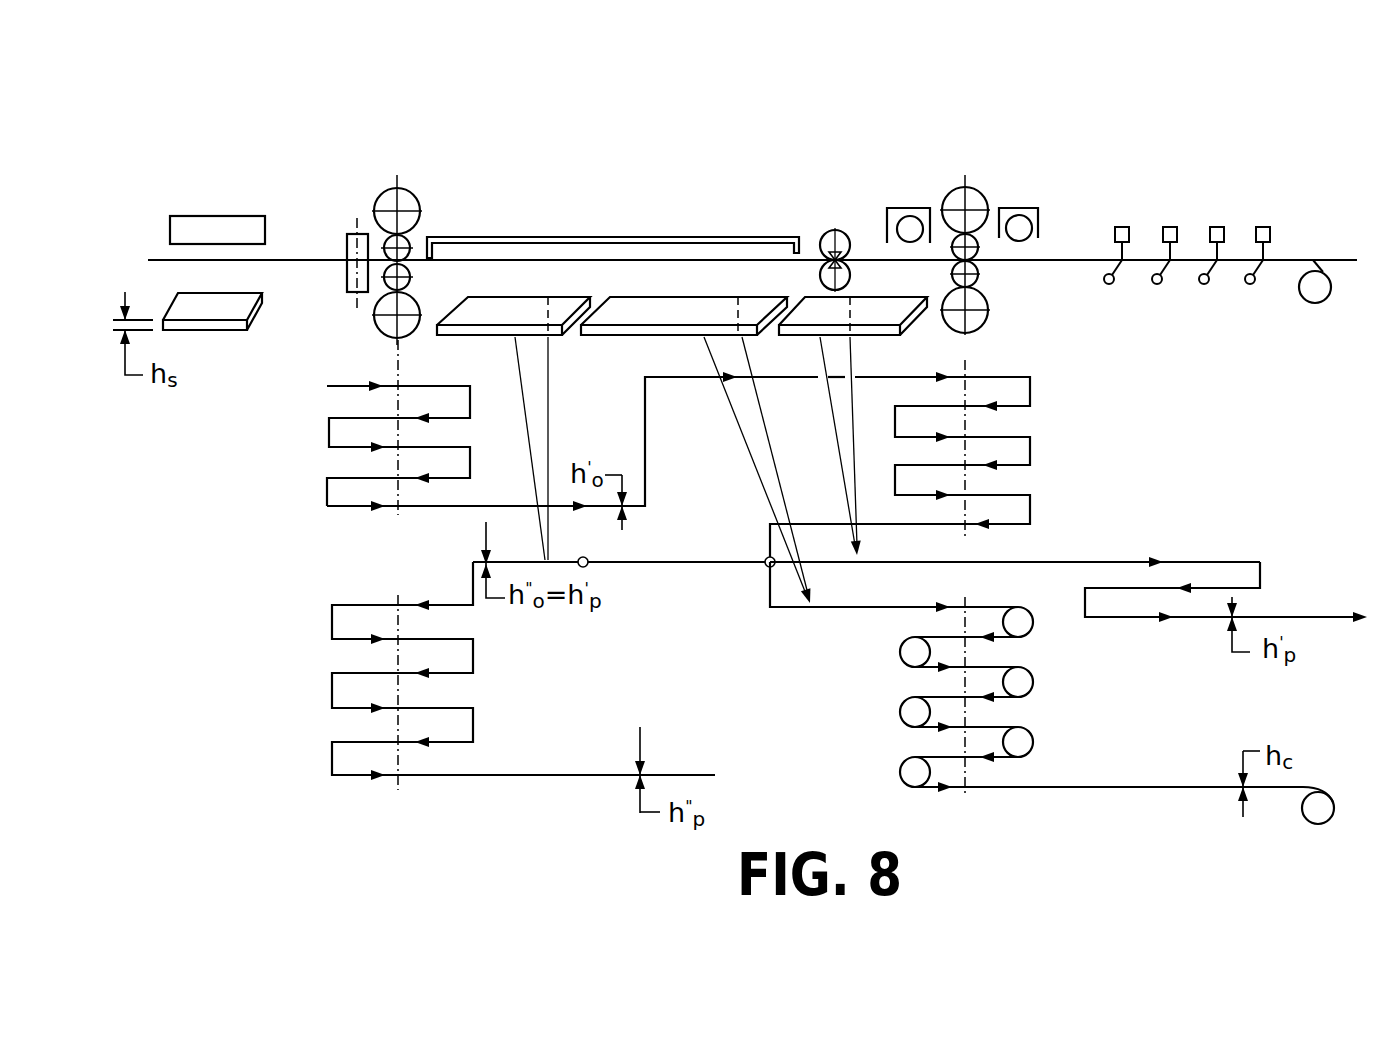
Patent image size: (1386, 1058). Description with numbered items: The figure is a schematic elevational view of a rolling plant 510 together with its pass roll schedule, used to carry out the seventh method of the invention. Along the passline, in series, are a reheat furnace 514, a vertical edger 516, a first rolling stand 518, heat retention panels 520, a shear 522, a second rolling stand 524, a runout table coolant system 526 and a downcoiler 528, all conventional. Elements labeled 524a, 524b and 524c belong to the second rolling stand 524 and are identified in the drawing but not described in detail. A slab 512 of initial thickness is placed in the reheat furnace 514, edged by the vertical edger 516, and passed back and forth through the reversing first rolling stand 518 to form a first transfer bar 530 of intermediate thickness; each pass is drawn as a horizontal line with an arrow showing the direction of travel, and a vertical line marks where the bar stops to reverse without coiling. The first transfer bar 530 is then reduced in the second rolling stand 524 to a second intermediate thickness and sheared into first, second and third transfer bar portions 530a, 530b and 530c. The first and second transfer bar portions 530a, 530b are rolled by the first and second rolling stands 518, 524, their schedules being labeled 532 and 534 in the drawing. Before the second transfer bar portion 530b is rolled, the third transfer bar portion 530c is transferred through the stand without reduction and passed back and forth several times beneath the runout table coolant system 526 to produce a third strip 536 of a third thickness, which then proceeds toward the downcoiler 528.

The rolling plant 510 is at (797, 132).
The slab 512 is at (228, 330).
The reheat furnace 514 is at (222, 222).
The vertical edger 516 is at (347, 240).
The first rolling stand 518 is at (385, 203).
The heat retention panels 520 is at (590, 237).
The shear 522 is at (826, 232).
The second rolling stand 524 is at (995, 215).
The finishing mill work roll 524a is at (978, 201).
The finishing mill entry guide roll 524b is at (890, 212).
The finishing mill exit guide roll 524c is at (1030, 222).
The runout table coolant system 526 is at (1168, 207).
The downcoiler 528 is at (1310, 296).
The first transfer bar 530 is at (715, 377).
The first transfer bar portion 530a is at (488, 307).
The second transfer bar portion 530b is at (718, 302).
The third transfer bar portion 530c is at (866, 306).
The rolled strip path 532 is at (493, 776).
The coiled strip section 534 is at (1035, 788).
The third strip 536 is at (1272, 614).